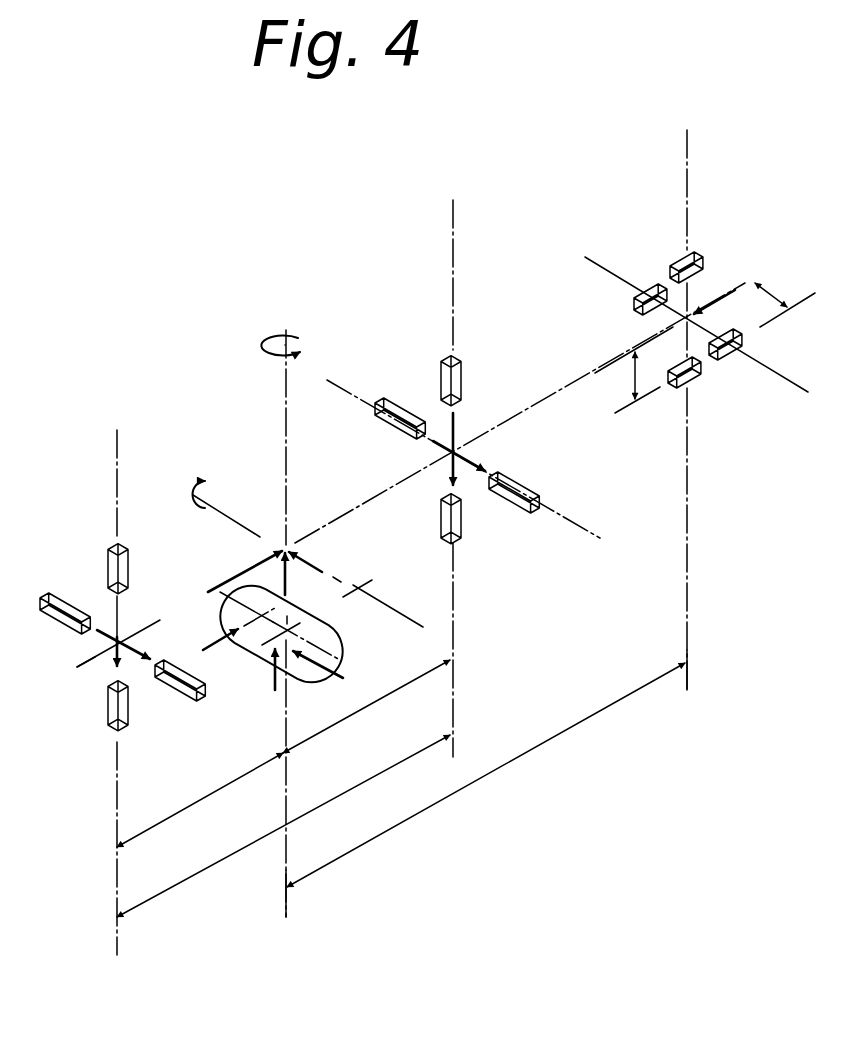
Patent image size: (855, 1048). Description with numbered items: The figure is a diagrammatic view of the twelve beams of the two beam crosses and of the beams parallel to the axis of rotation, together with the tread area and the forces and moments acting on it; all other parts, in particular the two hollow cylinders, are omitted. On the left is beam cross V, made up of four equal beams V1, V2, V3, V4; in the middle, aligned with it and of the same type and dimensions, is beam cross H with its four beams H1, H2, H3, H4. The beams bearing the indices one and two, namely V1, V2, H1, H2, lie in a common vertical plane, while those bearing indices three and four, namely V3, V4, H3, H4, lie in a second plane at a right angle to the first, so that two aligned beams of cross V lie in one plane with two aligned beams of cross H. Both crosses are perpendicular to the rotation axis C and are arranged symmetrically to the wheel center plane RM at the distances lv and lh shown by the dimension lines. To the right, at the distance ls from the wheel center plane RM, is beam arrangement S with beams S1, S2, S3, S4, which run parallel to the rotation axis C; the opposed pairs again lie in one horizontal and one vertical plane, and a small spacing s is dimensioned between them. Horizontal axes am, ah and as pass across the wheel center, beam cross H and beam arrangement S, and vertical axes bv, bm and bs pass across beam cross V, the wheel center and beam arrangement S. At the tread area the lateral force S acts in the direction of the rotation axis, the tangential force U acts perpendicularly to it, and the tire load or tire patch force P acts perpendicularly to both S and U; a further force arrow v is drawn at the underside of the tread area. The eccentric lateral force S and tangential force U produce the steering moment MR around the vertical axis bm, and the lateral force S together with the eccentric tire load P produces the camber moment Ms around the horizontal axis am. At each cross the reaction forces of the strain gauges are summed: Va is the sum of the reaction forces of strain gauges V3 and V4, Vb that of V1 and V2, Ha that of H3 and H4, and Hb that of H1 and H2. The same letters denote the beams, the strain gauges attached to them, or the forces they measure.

The beam cross V is at (118, 671).
The beam of beam cross V V1 is at (134, 569).
The beam of beam cross V V2 is at (134, 710).
The beam of beam cross V V3 is at (180, 680).
The beam of beam cross V V4 is at (53, 623).
The sum total of reaction forces of strain gauges V3 and V4 Va is at (132, 643).
The sum total of reaction forces of strain gauges V1 and V2 Vb is at (132, 637).
The rotational axis of wheel C is at (70, 675).
The wheel center plane RM is at (280, 609).
The steering moment MR is at (313, 354).
The camber moment Ms is at (226, 509).
The tire load P is at (281, 629).
The lateral force S is at (470, 394).
The tangential force U is at (310, 554).
The force v on contact patch v is at (324, 662).
The horizontal axis across the wheel center am is at (324, 629).
The beam cross H is at (452, 466).
The beam of beam cross H H1 is at (468, 381).
The beam of beam cross H H2 is at (471, 523).
The beam of beam cross H H3 is at (523, 487).
The beam of beam cross H H4 is at (393, 429).
The sum total of reaction forces of strain gauges H3 and H4 Ha is at (473, 456).
The sum total of reaction forces of strain gauges H1 and H2 Hb is at (469, 449).
The horizontal axis across beam cross H ah is at (482, 478).
The beam of beam arrangement S S1 is at (678, 257).
The beam of beam arrangement S S2 is at (694, 385).
The beam of beam arrangement S S3 is at (727, 358).
The beam of beam arrangement S S4 is at (636, 300).
The horizontal axis across beam arrangement S as is at (699, 339).
The sensor spacing s is at (705, 345).
The distance of beam cross V from wheel center plane lv is at (200, 800).
The distance of beam cross H from wheel center plane lh is at (366, 706).
The distance of beam arrangement S from wheel center plane ls is at (486, 775).
The vertical axis across beam cross V bv is at (283, 845).
The vertical axis across the wheel center bm is at (307, 893).
The vertical axis across beam arrangement S bs is at (703, 670).